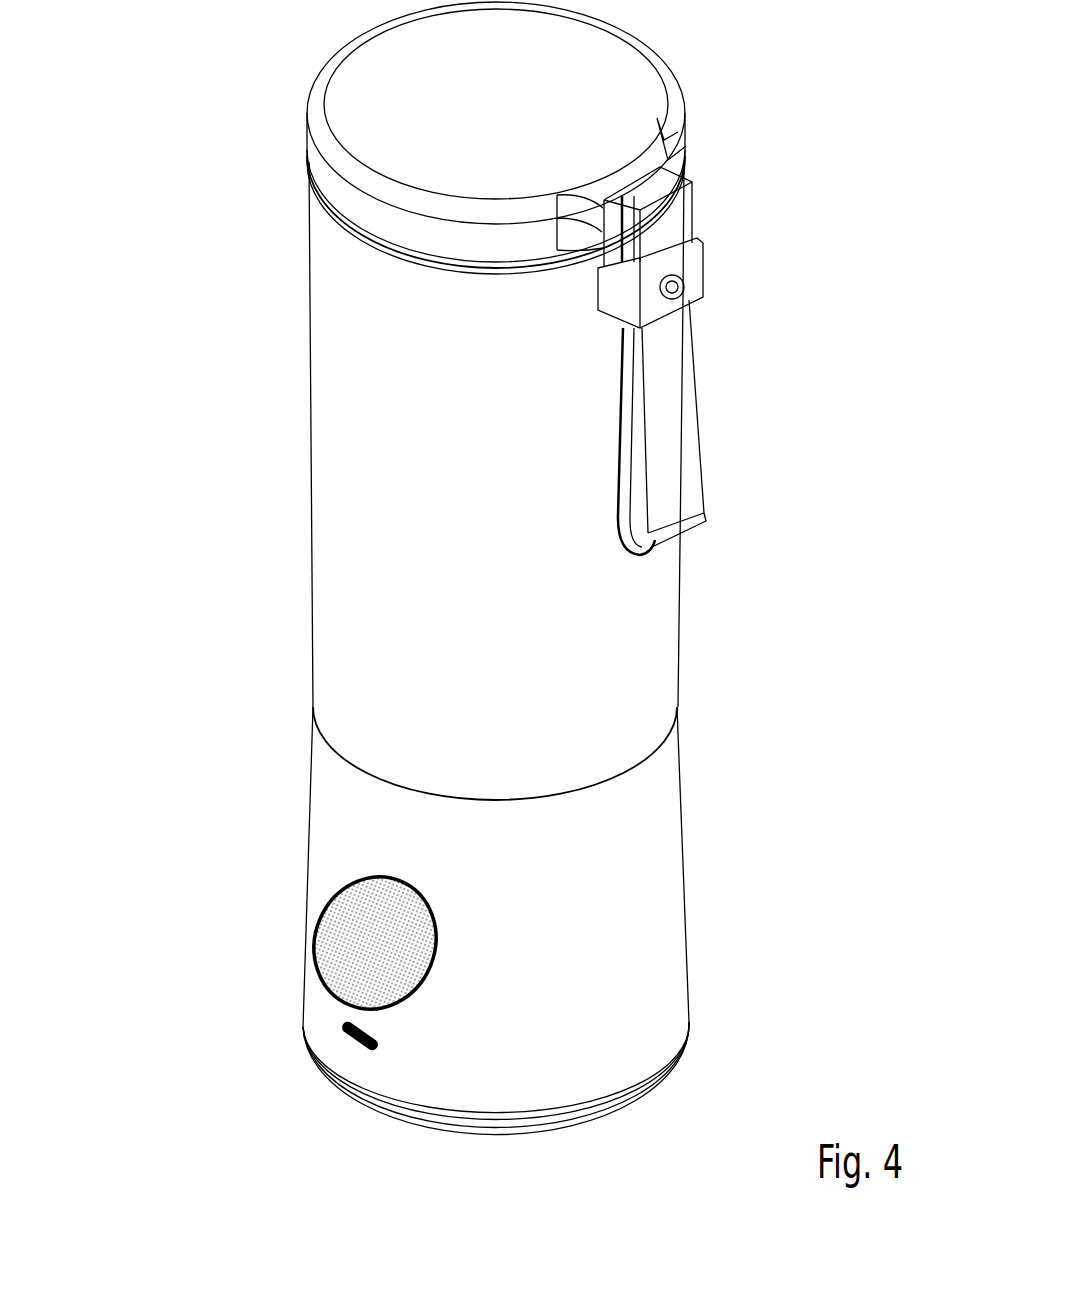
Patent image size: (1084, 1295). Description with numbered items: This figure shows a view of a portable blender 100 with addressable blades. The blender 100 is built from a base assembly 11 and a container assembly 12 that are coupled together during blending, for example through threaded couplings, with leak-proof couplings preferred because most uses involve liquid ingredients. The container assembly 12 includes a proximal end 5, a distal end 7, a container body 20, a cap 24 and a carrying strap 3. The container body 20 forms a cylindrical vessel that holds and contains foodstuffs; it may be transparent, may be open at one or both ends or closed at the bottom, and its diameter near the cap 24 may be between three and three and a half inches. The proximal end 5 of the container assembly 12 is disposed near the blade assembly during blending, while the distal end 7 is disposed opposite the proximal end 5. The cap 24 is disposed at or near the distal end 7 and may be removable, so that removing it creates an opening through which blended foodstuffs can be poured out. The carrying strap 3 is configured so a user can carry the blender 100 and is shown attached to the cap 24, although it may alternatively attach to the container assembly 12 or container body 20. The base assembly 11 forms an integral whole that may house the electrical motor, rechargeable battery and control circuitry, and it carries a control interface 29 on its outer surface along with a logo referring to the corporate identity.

The blender 100 is at (313, 45).
The container assembly 12 is at (798, 608).
The cap 24 is at (527, 108).
The container body 20 is at (327, 522).
The distal end 7 is at (312, 235).
The proximal end 5 is at (313, 688).
The carrying strap 3 is at (698, 410).
The base assembly 11 is at (793, 911).
The control interface 29 is at (313, 960).